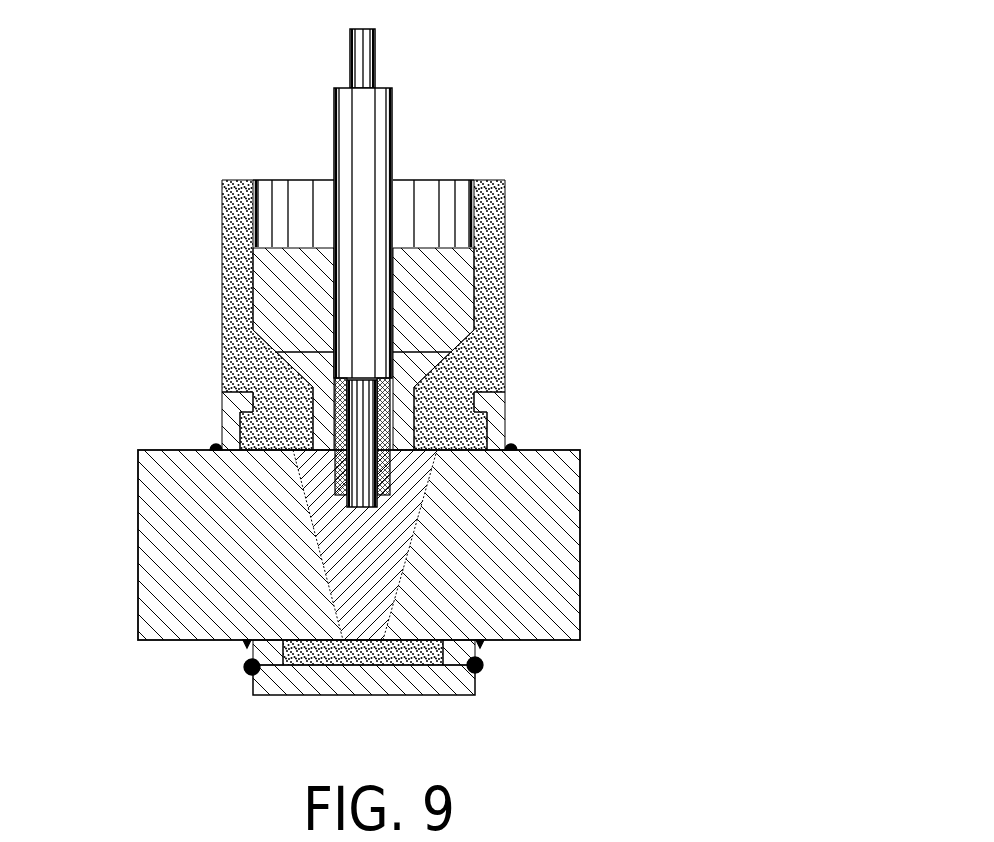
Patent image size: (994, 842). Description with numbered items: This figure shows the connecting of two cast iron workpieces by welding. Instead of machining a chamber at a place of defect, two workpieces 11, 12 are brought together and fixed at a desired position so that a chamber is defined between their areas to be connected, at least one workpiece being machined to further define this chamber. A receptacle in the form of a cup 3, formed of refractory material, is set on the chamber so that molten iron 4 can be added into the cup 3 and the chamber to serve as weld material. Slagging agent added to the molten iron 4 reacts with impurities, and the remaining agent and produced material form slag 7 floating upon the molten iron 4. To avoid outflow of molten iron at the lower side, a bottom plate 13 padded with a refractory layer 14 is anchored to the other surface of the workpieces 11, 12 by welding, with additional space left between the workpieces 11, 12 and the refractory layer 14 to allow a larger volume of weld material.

The cup 3 is at (508, 217).
The slag 7 is at (455, 307).
The workpiece 11 is at (210, 527).
The workpiece 12 is at (545, 477).
The molten iron 4 is at (378, 548).
The refractory layer 14 is at (470, 649).
The bottom plate 13 is at (455, 681).